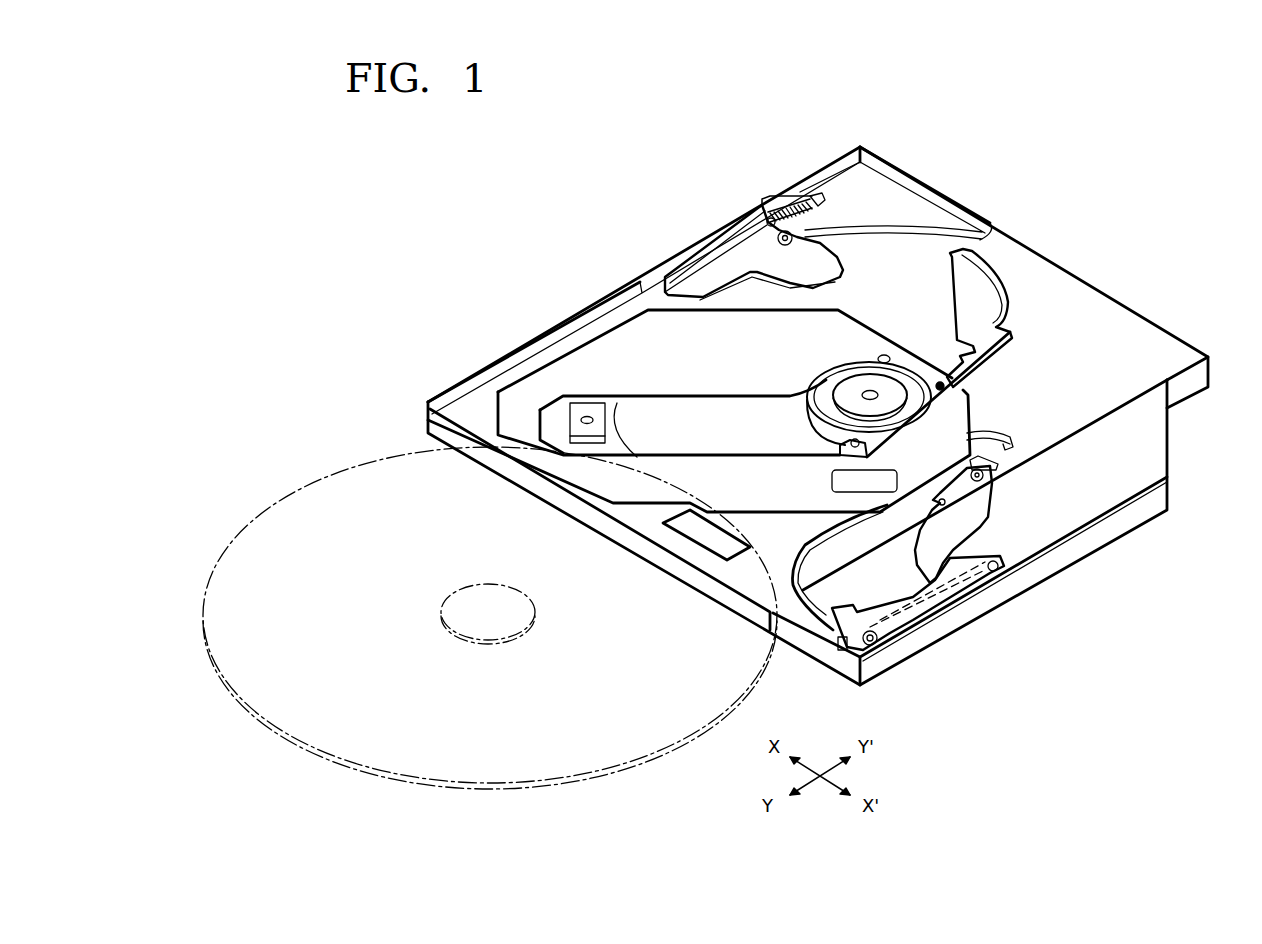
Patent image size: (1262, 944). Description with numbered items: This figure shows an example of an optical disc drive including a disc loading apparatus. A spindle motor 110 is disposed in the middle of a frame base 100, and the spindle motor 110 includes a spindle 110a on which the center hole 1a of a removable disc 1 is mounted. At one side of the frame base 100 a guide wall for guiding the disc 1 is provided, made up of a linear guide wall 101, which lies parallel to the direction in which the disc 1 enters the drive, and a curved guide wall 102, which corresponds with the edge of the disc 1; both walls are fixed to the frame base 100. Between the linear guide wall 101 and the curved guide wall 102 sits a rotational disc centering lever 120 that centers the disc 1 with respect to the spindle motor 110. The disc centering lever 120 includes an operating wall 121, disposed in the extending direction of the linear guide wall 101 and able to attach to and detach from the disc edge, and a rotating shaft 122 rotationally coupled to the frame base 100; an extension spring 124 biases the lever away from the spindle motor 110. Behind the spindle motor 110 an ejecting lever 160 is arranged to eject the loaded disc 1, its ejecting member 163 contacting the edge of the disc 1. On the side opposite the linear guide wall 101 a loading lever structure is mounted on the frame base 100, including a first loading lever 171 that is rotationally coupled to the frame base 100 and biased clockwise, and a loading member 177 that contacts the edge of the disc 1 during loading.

The removable disc 1 is at (315, 495).
The center hole 1a is at (453, 597).
The frame base 100 is at (1082, 297).
The linear guide wall 101 is at (577, 316).
The curved guide wall 102 is at (907, 230).
The spindle motor 110 is at (856, 374).
The spindle 110a is at (888, 387).
The disc centering lever 120 is at (749, 220).
The operating wall 121 is at (697, 257).
The rotating shaft 122 is at (768, 226).
The extension spring 124 is at (803, 210).
The ejecting lever 160 is at (977, 317).
The ejecting member 163 is at (830, 445).
The first loading lever 171 is at (973, 512).
The loading member 177 is at (880, 640).